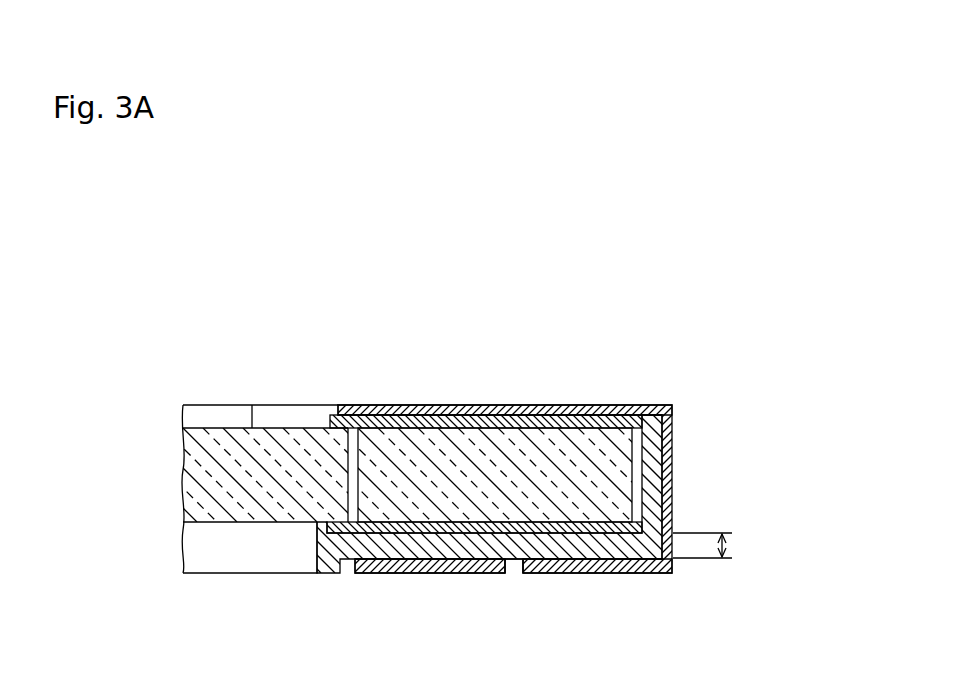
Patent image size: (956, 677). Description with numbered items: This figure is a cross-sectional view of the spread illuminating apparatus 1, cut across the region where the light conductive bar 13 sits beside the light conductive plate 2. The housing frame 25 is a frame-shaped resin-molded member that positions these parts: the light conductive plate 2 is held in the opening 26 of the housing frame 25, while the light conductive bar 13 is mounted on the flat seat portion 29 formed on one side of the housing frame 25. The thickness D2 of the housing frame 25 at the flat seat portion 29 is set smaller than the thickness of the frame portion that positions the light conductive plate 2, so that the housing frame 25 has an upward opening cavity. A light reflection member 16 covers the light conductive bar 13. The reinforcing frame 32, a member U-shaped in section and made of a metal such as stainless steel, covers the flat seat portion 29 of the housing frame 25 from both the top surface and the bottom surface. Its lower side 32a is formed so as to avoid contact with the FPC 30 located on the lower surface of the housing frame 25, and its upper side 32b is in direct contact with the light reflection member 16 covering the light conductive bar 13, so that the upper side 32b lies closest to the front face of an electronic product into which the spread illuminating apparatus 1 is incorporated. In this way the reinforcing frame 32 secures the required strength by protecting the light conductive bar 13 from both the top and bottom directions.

The spread illuminating apparatus 1 is at (478, 293).
The light conductive plate 2 is at (282, 465).
The light conductive bar 13 is at (502, 467).
The light reflection member 16 is at (437, 405).
The housing frame 25 is at (512, 575).
The opening 26 is at (232, 575).
The flat seat portion 29 is at (535, 522).
The FPC 30 is at (405, 575).
The reinforcing frame 32 is at (675, 437).
The one side (lower side) of reinforcing frame 32a is at (612, 575).
The one side (upper side) of reinforcing frame 32b is at (620, 405).
The thickness of recess and flat seat portion D2 is at (727, 545).